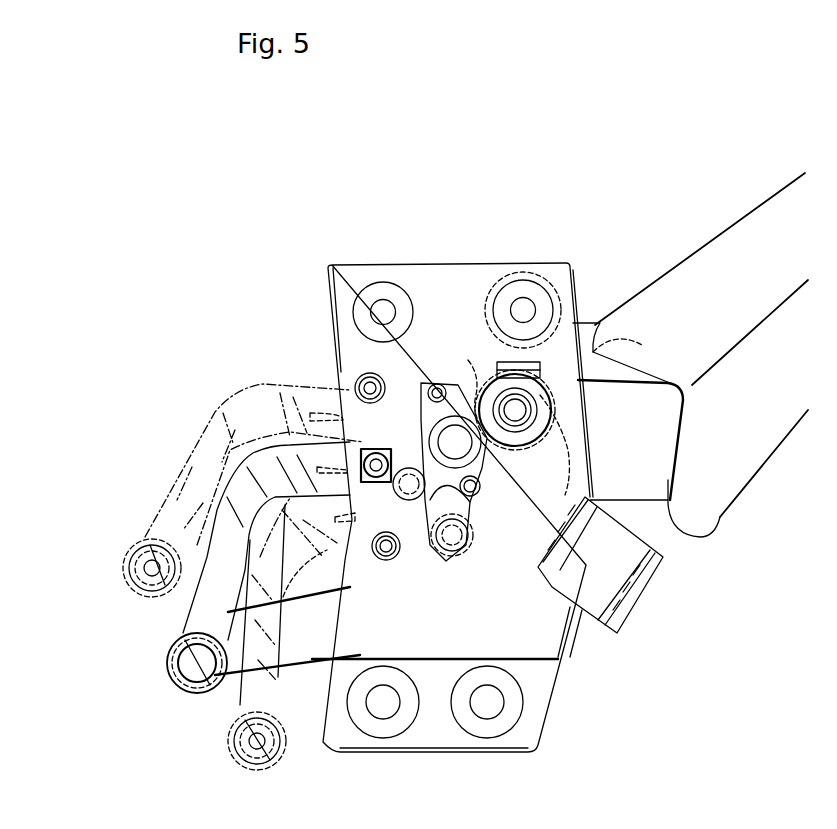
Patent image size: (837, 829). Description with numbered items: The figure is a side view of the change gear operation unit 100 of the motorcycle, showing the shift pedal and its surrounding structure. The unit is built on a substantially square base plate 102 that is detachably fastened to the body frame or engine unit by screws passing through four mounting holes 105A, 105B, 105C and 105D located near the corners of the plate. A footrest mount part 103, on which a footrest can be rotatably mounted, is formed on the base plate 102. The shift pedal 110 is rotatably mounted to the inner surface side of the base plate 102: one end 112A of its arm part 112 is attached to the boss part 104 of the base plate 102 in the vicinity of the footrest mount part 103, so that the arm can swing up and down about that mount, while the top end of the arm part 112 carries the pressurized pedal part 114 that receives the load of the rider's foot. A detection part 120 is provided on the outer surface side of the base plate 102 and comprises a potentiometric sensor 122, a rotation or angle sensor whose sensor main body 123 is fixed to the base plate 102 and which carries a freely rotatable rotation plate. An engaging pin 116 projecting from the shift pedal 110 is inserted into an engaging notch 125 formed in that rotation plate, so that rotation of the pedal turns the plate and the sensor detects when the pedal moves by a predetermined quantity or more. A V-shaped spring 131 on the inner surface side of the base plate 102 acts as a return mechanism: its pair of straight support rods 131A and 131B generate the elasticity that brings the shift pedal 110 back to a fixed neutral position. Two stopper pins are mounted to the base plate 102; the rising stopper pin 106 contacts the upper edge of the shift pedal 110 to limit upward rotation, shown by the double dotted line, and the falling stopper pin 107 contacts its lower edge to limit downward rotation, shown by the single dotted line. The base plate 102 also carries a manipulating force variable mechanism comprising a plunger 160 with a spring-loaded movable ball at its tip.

The change gear operation unit 100 is at (561, 212).
The base plate 102 is at (405, 264).
The footrest mount part 103 is at (608, 622).
The boss part 104 is at (562, 412).
The mounting hole 105A is at (388, 305).
The mounting hole 105B is at (527, 300).
The mounting hole 105C is at (385, 705).
The mounting hole 105D is at (490, 705).
The rising stopper pin 106 is at (364, 388).
The falling stopper pin 107 is at (387, 560).
The shift pedal 110 is at (228, 743).
The arm part 112 is at (252, 418).
The end of arm part 112A is at (585, 447).
The pedal part 114 is at (180, 663).
The engaging pin 116 is at (430, 386).
The detection part 120 is at (480, 487).
The potentiometric sensor 122 is at (458, 448).
The sensor main body 123 is at (463, 505).
The engaging notch 125 is at (410, 468).
The V-shaped spring 131 is at (603, 337).
The support rod 131A is at (468, 360).
The support rod 131B is at (452, 556).
The plunger 160 is at (374, 482).